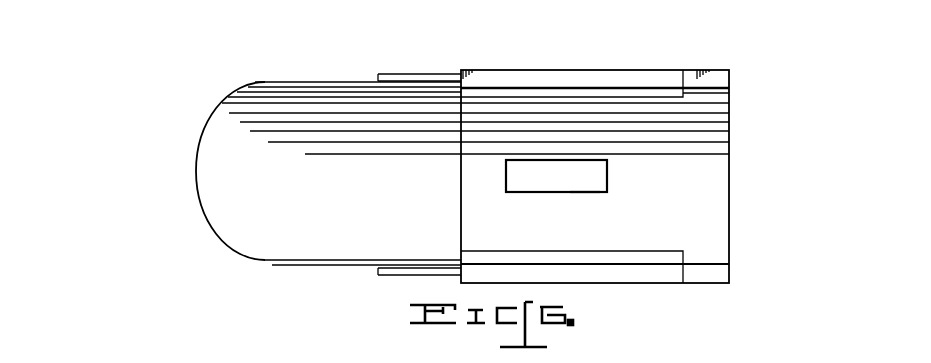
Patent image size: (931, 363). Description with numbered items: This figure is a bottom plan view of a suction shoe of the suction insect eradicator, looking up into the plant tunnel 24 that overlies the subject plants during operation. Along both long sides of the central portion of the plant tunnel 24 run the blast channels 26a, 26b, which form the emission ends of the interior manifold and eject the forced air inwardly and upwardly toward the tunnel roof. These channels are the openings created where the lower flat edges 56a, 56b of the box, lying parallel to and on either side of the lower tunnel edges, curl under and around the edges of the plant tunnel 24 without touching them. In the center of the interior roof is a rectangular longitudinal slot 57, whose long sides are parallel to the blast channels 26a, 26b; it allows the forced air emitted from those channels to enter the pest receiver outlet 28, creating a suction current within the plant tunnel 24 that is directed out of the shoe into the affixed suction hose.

The plant tunnel 24 is at (222, 178).
The blast channel 26a is at (609, 102).
The blast channel 26b is at (610, 250).
The lower flat edge of the box 56a is at (517, 97).
The lower flat edge of the box 56b is at (671, 258).
The longitudinal slot 57 is at (535, 193).
The pest receiver outlet 28 is at (577, 185).